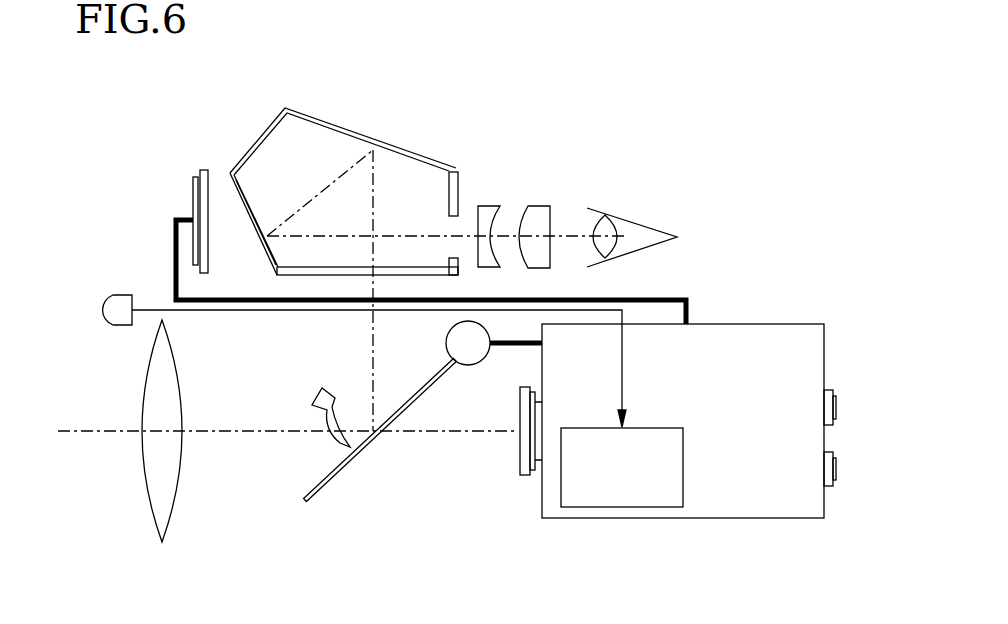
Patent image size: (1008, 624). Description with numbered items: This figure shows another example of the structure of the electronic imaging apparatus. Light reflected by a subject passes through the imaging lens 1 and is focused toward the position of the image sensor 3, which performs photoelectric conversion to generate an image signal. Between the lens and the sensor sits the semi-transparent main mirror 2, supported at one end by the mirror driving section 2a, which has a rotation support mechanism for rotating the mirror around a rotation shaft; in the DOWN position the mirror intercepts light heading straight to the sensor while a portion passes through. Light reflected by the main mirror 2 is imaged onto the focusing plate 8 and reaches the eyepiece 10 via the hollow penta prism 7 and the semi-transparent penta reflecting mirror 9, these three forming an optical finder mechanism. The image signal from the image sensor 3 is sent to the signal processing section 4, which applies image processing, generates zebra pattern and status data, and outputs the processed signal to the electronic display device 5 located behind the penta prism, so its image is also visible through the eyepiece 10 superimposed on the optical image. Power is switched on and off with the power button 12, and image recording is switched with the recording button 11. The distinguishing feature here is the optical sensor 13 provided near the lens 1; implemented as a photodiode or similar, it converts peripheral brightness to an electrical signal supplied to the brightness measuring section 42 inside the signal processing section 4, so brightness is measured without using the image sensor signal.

The imaging lens 1 is at (167, 505).
The main mirror 2 is at (337, 473).
The mirror driving section 2a is at (467, 361).
The image sensor 3 is at (520, 476).
The signal processing section 4 is at (792, 502).
The electronic display device 5 is at (195, 200).
The hollow penta prism 7 is at (413, 155).
The focusing plate 8 is at (443, 277).
The semi-transparent penta reflecting mirror 9 is at (260, 240).
The eyepiece 10 is at (490, 210).
The recording button 11 is at (836, 413).
The power button 12 is at (836, 480).
The optical sensor 13 is at (118, 308).
The brightness measuring section 42 is at (623, 508).